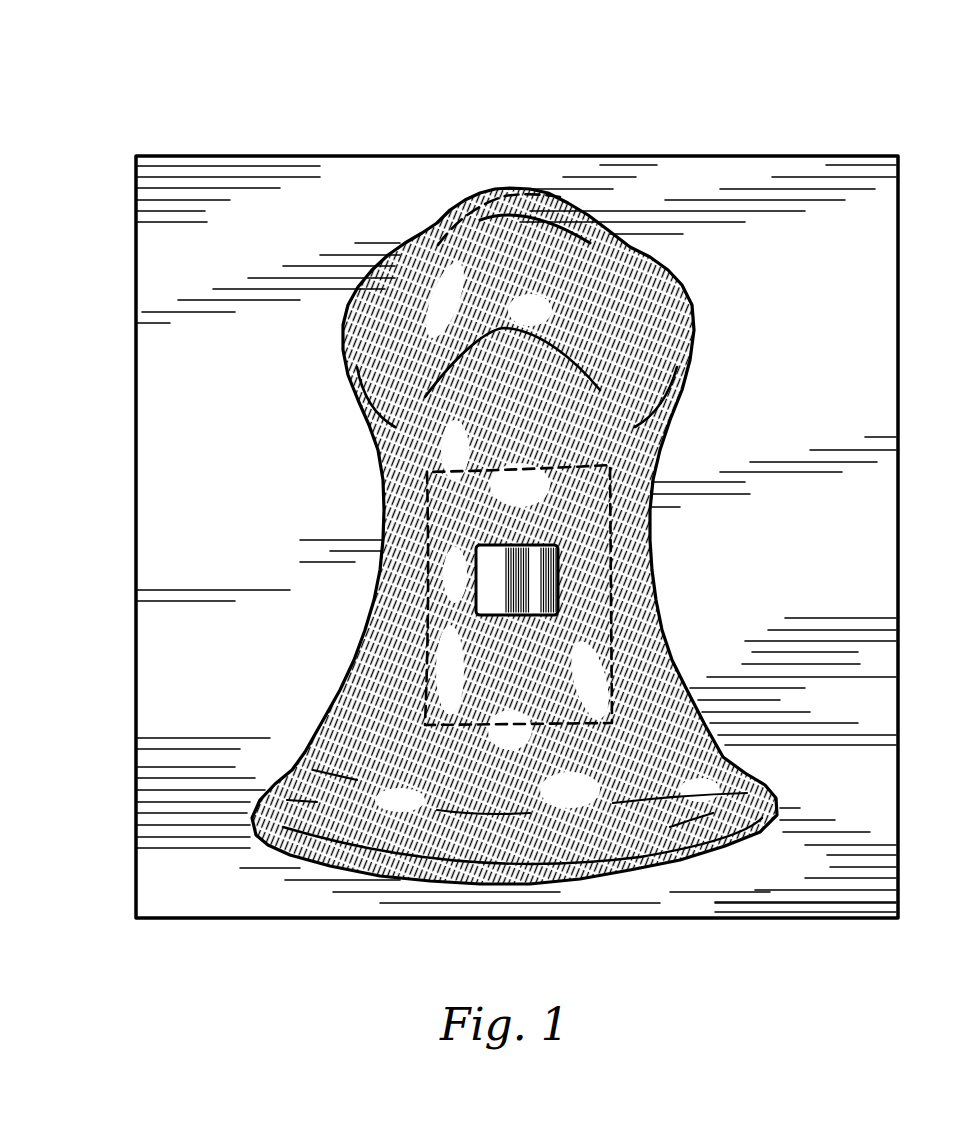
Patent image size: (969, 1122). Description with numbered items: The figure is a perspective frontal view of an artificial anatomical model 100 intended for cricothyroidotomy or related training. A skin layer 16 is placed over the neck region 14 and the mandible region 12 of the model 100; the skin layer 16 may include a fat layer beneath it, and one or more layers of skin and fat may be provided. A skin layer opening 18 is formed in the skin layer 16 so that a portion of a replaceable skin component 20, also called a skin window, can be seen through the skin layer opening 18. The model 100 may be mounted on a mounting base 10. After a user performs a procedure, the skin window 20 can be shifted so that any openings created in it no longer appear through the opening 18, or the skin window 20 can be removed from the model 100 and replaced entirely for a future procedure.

The artificial anatomical model 100 is at (775, 112).
The mounting base 10 is at (440, 170).
The mandible region 12 is at (123, 180).
The neck region 14 is at (120, 432).
The skin layer 16 is at (635, 622).
The skin layer opening 18 is at (557, 548).
The replaceable skin component 20 is at (495, 580).